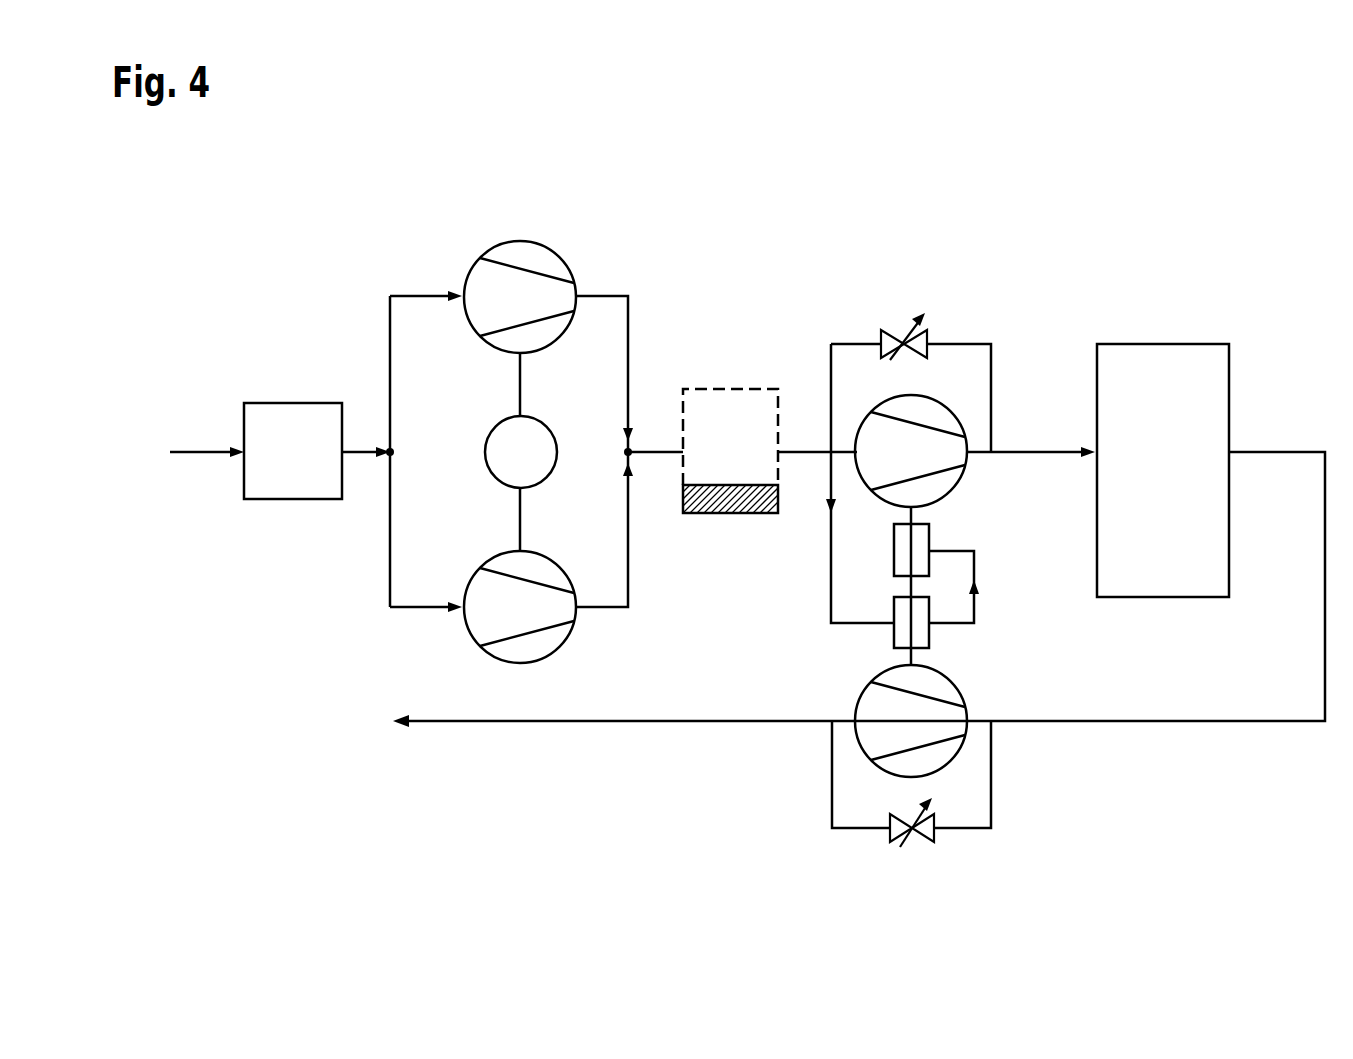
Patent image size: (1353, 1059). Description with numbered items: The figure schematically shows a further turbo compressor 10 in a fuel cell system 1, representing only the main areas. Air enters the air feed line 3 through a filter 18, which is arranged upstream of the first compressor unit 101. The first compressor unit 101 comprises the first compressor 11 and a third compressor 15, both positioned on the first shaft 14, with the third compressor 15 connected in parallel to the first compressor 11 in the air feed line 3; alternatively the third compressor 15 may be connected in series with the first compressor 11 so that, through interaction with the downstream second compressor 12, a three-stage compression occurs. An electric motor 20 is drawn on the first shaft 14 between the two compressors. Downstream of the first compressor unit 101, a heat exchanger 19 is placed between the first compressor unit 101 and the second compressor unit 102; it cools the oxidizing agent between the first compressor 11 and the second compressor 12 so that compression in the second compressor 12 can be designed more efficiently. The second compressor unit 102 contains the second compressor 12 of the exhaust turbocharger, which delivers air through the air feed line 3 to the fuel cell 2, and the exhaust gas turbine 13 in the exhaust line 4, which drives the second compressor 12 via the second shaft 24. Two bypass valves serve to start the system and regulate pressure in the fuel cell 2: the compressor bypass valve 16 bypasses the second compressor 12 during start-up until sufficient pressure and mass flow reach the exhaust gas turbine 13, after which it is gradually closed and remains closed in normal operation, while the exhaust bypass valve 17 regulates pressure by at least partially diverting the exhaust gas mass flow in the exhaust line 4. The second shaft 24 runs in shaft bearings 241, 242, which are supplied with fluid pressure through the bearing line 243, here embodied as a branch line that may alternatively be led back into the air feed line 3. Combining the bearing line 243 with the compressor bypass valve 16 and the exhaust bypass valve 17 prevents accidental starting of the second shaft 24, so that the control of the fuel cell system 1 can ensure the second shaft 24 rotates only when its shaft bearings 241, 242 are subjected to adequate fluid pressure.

The fuel cell system 1 is at (855, 222).
The fuel cell 2 is at (1160, 344).
The air feed line 3 is at (1031, 452).
The exhaust line 4 is at (1163, 721).
The turbo compressor 10 is at (717, 222).
The first compressor 11 is at (520, 241).
The second compressor 12 is at (955, 413).
The exhaust gas turbine 13 is at (870, 681).
The first shaft 14 is at (518, 388).
The third compressor 15 is at (571, 633).
The compressor bypass valve 16 is at (900, 328).
The exhaust bypass valve 17 is at (890, 838).
The filter 18 is at (295, 403).
The heat exchanger 19 is at (733, 389).
The electric motor 20 is at (556, 432).
The second shaft 24 is at (910, 587).
The first compressor unit 101 is at (600, 222).
The second compressor unit 102 is at (1002, 582).
The shaft bearing 241 is at (929, 532).
The shaft bearing 242 is at (930, 643).
The bearing line 243 is at (829, 623).